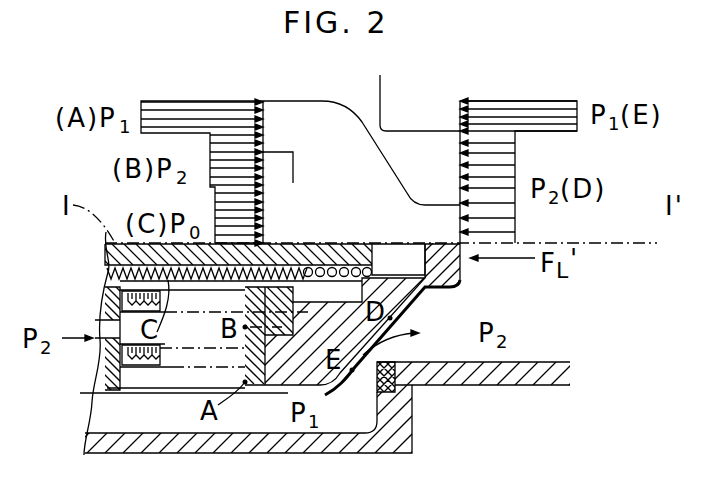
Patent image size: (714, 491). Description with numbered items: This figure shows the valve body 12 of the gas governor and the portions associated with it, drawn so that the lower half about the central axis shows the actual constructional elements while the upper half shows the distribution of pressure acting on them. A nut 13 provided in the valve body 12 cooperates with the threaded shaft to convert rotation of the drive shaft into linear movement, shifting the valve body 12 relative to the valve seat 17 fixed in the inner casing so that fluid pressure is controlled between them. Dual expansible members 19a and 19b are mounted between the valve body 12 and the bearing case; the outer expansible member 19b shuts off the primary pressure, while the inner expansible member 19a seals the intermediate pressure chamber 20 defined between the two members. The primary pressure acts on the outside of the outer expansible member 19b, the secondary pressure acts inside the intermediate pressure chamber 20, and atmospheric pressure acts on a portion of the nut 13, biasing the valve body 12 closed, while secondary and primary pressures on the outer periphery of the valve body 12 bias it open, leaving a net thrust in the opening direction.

The valve body 12 is at (397, 291).
The nut 13 is at (282, 292).
The valve seat 17 is at (388, 380).
The expansible member 19a is at (125, 297).
The expansible member 19b is at (125, 352).
The intermediate pressure chamber 20 is at (170, 357).